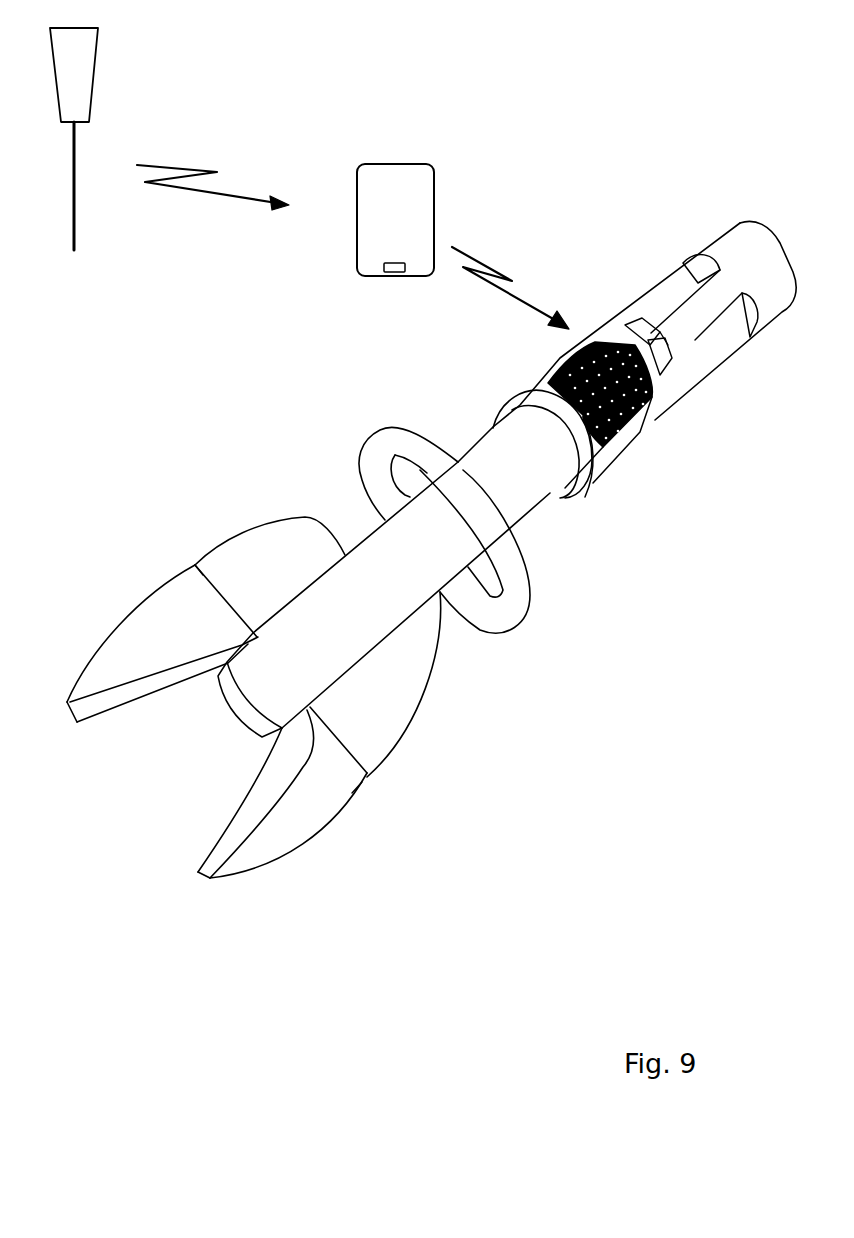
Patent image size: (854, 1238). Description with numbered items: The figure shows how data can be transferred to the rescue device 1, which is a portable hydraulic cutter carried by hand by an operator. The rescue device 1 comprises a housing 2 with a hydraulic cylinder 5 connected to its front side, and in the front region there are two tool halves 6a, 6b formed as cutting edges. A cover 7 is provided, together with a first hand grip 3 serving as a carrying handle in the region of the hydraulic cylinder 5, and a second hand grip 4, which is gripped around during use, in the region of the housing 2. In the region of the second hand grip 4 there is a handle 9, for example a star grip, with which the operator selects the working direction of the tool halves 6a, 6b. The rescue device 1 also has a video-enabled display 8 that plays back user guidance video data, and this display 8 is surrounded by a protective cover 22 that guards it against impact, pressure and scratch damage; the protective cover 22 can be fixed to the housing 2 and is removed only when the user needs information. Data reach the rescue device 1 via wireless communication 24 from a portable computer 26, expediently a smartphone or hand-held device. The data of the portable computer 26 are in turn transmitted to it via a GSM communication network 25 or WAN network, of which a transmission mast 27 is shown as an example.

The rescue device 1 is at (632, 162).
The housing 2 is at (513, 400).
The first hand grip 3 is at (387, 443).
The second hand grip 4 is at (687, 317).
The hydraulic cylinder 5 is at (520, 502).
The tool half 6a is at (135, 630).
The tool half 6b is at (284, 836).
The cover 7 is at (243, 545).
The video-enabled display 8 is at (583, 413).
The handle 9 is at (662, 373).
The protective cover 22 is at (632, 425).
The wireless communication 24 is at (525, 298).
The GSM communication network 25 is at (190, 168).
The portable computer 26 is at (402, 176).
The transmission mast 27 is at (82, 73).